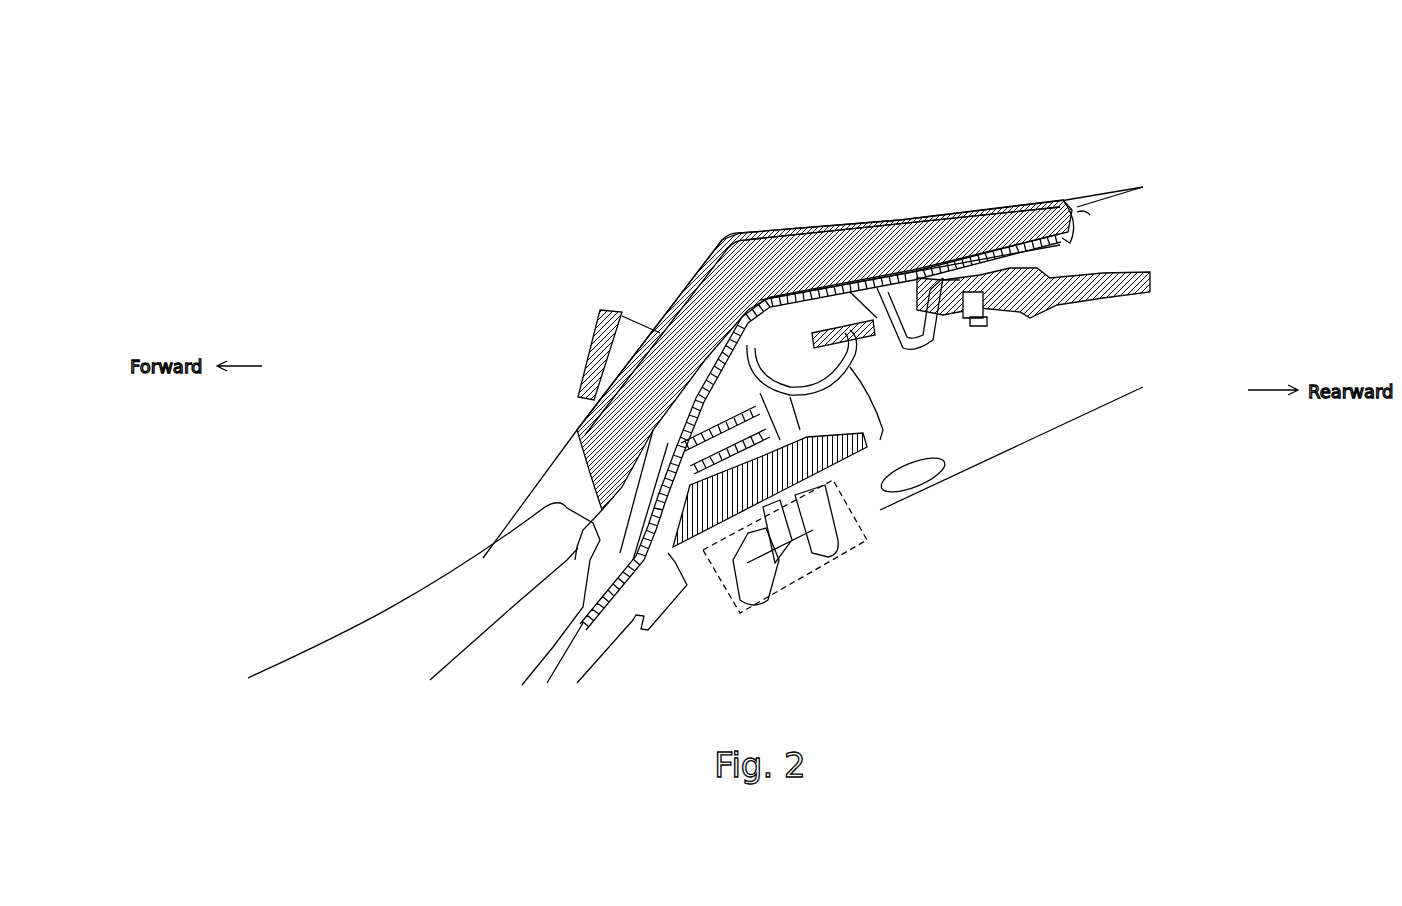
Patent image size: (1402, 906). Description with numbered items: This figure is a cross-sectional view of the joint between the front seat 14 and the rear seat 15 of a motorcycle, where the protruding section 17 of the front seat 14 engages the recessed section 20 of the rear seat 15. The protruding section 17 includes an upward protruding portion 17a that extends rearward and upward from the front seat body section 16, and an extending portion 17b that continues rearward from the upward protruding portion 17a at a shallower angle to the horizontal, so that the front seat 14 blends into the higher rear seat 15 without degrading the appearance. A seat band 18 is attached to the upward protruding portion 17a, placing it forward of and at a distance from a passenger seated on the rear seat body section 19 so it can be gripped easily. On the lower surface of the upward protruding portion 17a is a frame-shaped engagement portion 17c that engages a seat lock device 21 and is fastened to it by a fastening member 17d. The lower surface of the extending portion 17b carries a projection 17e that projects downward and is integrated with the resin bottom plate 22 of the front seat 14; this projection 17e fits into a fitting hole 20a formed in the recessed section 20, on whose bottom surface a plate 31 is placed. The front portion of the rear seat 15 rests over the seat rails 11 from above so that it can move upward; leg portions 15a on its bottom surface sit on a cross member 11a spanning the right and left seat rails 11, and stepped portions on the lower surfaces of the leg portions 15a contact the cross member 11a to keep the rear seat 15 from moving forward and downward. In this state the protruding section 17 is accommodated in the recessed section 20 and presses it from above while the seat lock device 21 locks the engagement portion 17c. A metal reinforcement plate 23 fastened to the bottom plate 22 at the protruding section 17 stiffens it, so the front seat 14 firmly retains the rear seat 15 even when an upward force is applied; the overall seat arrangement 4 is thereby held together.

The cowl louver structure 4 is at (928, 542).
The seat rails 11 is at (1111, 401).
The cross member 11a is at (935, 485).
The front seat 14 is at (364, 380).
The rear seat 15 is at (1172, 97).
The leg portions 15a is at (833, 400).
The front seat body section 16 is at (312, 653).
The protruding section 17 is at (606, 164).
The upward protruding portion 17a is at (568, 438).
The extending portion 17b is at (787, 237).
The engagement portion 17c is at (763, 577).
The fastening member 17d is at (760, 560).
The projection 17e is at (937, 342).
The seat band 18 is at (617, 305).
The rear seat body section 19 is at (1130, 186).
The recessed section 20 is at (1093, 205).
The fitting hole 20a is at (957, 332).
The seat lock device 21 is at (807, 580).
The bottom plate 22 is at (880, 278).
The reinforcement plate 23 is at (833, 273).
The plate 31 is at (960, 280).